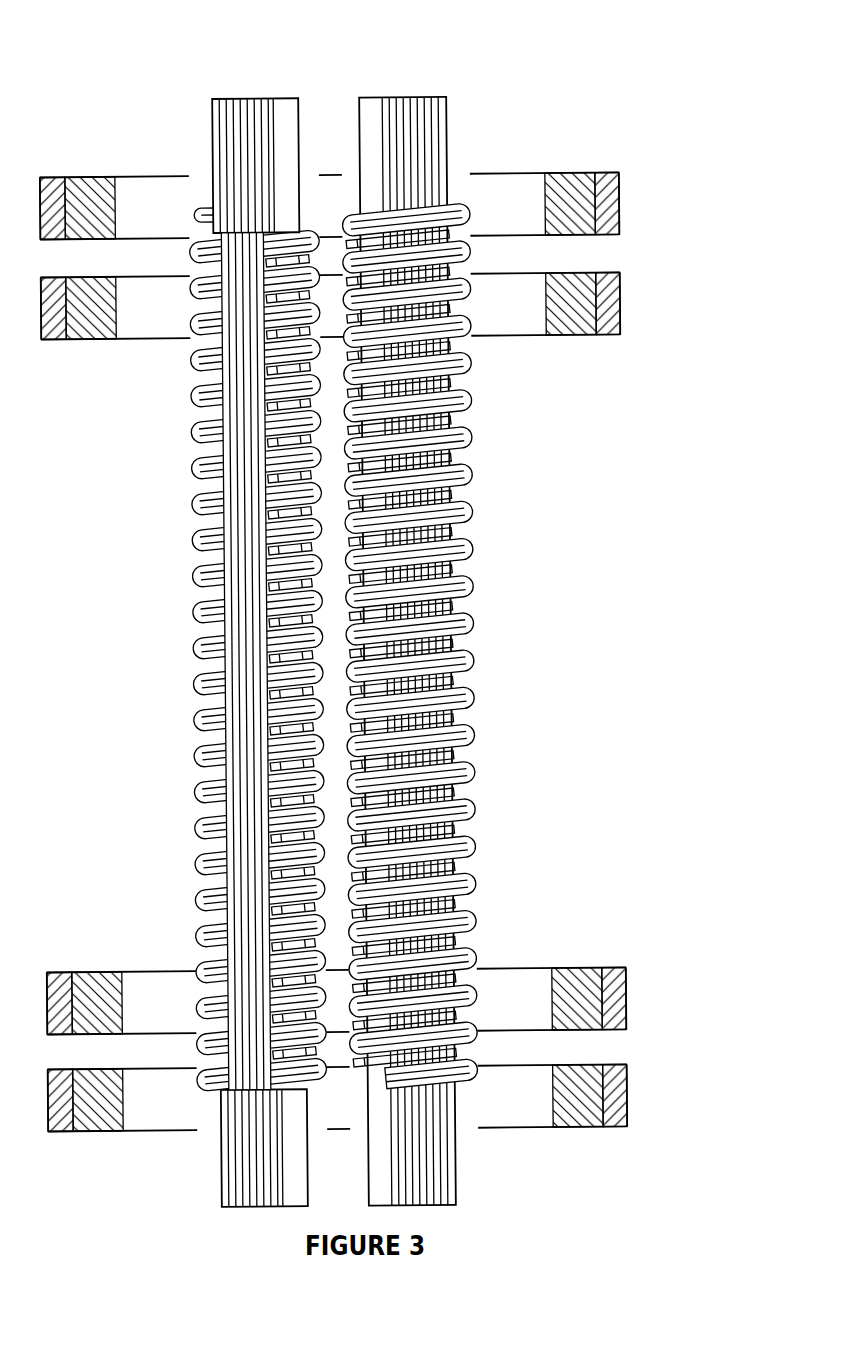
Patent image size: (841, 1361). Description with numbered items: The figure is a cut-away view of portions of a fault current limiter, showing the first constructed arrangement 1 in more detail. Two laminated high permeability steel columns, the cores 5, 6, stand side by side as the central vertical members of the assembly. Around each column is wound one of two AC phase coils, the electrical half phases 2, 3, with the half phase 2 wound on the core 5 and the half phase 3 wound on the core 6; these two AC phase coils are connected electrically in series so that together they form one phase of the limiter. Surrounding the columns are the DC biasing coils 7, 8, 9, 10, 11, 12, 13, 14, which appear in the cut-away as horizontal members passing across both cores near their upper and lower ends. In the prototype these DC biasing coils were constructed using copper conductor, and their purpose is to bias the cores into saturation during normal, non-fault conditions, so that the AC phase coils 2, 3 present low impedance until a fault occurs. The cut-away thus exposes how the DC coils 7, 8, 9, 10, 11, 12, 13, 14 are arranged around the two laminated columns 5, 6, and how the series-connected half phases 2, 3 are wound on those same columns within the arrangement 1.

The first constructed arrangement 1 is at (388, 611).
The electrical half phase 2 is at (193, 593).
The electrical half phase 3 is at (476, 510).
The laminated high permeability core 5 is at (299, 128).
The laminated high permeability core 6 is at (447, 128).
The DC biasing coil 7 is at (620, 206).
The DC biasing coil 8 is at (622, 283).
The DC biasing coil 9 is at (628, 1002).
The DC biasing coil 10 is at (628, 1098).
The DC biasing coil 11 is at (572, 175).
The DC biasing coil 12 is at (572, 338).
The DC biasing coil 13 is at (573, 968).
The DC biasing coil 14 is at (570, 1128).